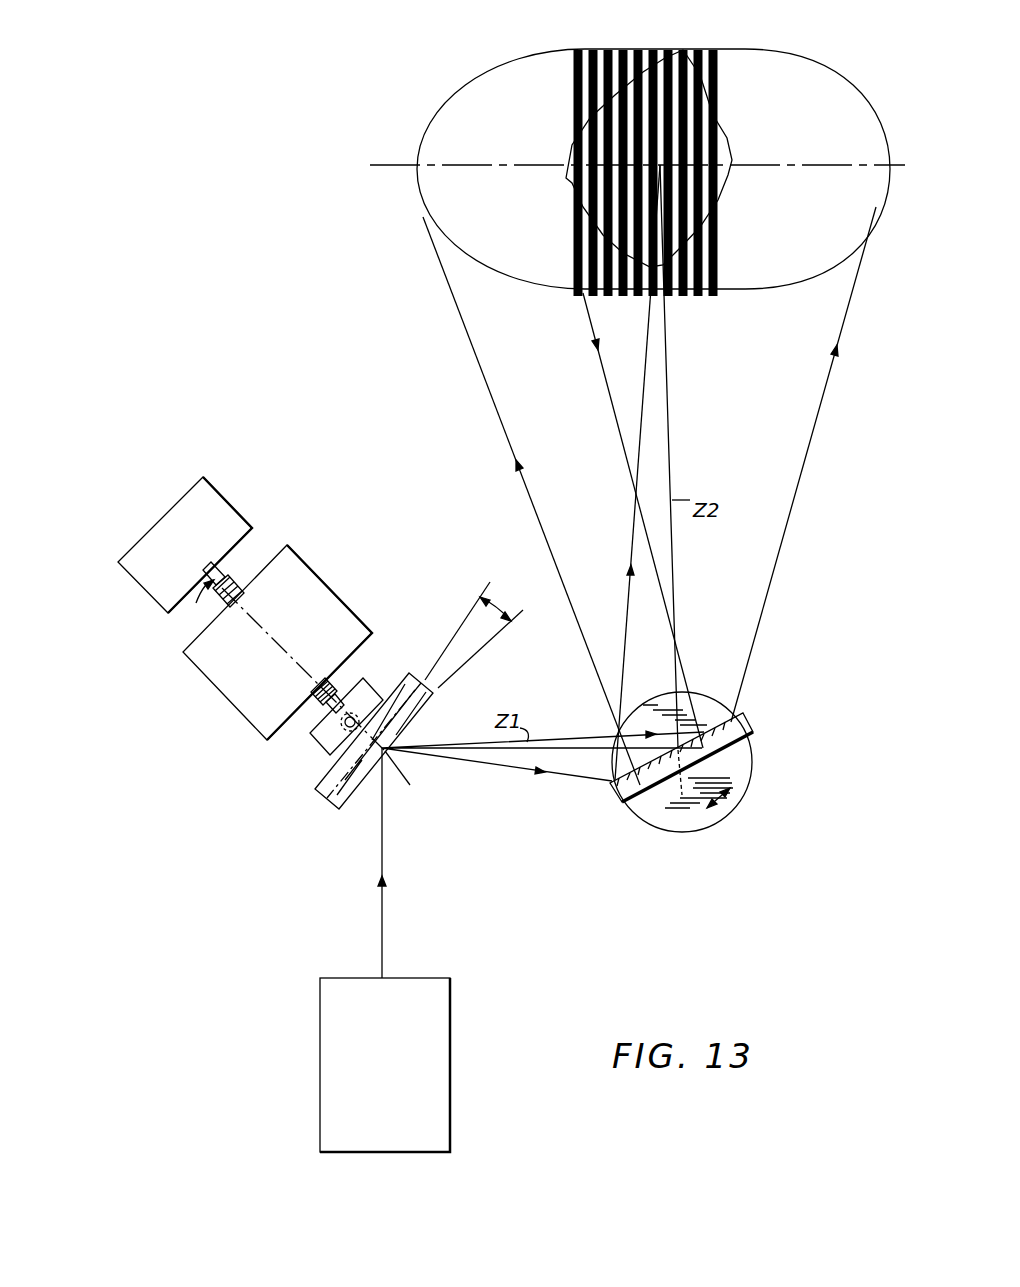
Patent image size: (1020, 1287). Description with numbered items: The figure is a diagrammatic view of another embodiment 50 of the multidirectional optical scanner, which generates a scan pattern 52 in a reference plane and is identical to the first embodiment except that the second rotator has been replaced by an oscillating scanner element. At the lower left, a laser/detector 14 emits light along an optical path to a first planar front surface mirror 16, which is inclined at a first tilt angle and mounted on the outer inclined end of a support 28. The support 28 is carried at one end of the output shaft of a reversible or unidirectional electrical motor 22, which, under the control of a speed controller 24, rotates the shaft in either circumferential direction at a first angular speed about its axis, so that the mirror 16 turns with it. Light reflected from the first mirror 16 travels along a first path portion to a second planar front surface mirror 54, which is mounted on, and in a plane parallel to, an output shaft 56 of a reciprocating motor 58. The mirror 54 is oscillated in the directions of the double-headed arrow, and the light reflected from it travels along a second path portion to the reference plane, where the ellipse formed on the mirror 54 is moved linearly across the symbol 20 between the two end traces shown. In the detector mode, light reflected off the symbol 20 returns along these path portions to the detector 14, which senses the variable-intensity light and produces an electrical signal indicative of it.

The detector 14 is at (325, 1012).
The first planar front surface mirror 16 is at (333, 798).
The symbol 20 is at (617, 204).
The electrical motor 22 is at (323, 588).
The speed controller 24 is at (217, 498).
The support 28 is at (362, 693).
The embodiment 50 is at (674, 795).
The scan pattern 52 is at (858, 36).
The second planar front surface mirror 54 is at (753, 725).
The output shaft 56 is at (688, 798).
The reciprocating motor 58 is at (737, 777).